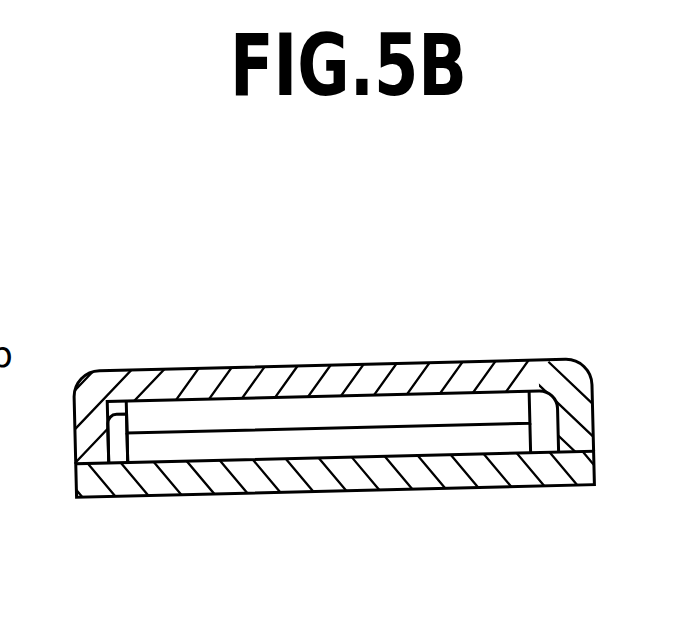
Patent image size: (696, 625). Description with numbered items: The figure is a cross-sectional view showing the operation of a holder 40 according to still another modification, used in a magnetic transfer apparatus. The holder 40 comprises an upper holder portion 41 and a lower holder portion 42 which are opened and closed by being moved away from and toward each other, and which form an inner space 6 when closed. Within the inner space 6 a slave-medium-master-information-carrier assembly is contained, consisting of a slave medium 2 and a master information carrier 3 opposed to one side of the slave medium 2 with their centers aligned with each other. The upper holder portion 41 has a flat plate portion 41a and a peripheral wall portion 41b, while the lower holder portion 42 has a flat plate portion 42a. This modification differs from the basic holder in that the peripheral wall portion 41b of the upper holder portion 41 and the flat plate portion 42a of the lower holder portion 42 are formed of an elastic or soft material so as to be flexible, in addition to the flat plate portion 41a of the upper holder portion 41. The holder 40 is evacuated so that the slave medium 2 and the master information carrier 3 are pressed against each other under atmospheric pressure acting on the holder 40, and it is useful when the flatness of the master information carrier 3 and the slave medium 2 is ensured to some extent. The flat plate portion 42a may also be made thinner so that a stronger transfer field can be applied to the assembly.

The holder 40 is at (217, 288).
The upper holder portion 41 is at (355, 411).
The flat plate portion of the upper holder portion 41a is at (328, 412).
The peripheral wall portion of the upper holder portion 41b is at (355, 409).
The lower holder portion 42 is at (333, 475).
The flat plate portion of the lower holder portion 42a is at (333, 475).
The inner space 6 is at (118, 438).
The slave medium 2 is at (328, 412).
The master information carrier 3 is at (329, 442).